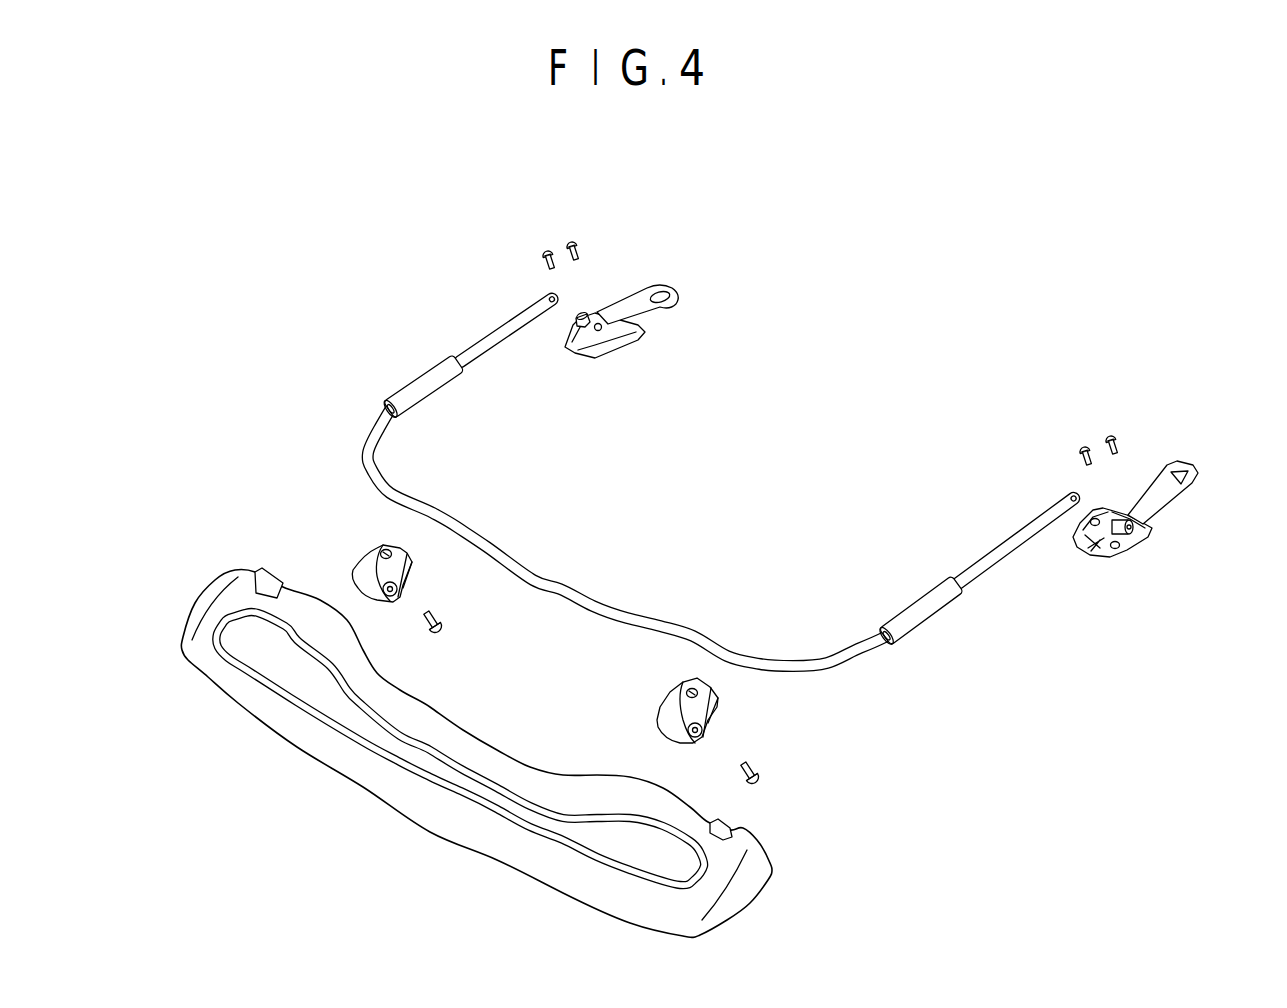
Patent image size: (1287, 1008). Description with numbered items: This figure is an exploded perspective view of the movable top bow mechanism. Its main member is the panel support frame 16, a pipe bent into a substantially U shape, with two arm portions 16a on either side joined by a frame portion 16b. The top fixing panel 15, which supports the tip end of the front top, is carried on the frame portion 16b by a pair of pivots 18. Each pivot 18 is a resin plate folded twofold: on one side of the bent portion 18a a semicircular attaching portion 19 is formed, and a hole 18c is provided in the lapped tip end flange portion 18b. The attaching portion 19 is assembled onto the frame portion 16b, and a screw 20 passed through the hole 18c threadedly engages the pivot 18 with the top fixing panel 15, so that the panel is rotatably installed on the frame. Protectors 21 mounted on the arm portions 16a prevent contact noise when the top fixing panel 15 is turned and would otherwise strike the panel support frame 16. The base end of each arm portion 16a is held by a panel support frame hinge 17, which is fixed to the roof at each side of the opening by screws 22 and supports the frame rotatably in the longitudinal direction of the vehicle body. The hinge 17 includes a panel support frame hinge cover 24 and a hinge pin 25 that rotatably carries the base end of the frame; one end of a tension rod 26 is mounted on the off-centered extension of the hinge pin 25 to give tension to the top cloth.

The top fixing panel 15 is at (773, 870).
The panel support frame 16 is at (705, 493).
The arm portion 16a is at (484, 356).
The frame portion 16b is at (635, 609).
The panel support frame hinge 17 is at (918, 430).
The pivot 18 is at (520, 629).
The bent portion 18a is at (353, 575).
The tip end flange portion 18b is at (388, 543).
The hole 18c is at (393, 556).
The attaching portion 19 is at (391, 597).
The screw 20 is at (445, 631).
The protector 21 is at (413, 390).
The screw 22 is at (572, 242).
The panel support frame hinge cover 24 is at (641, 335).
The hinge pin 25 is at (602, 313).
The tension rod 26 is at (670, 288).